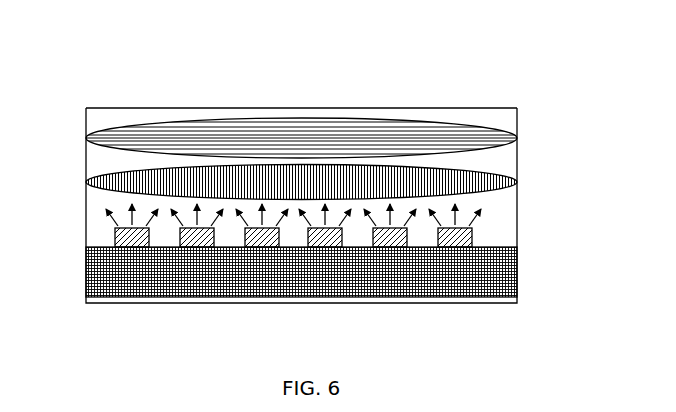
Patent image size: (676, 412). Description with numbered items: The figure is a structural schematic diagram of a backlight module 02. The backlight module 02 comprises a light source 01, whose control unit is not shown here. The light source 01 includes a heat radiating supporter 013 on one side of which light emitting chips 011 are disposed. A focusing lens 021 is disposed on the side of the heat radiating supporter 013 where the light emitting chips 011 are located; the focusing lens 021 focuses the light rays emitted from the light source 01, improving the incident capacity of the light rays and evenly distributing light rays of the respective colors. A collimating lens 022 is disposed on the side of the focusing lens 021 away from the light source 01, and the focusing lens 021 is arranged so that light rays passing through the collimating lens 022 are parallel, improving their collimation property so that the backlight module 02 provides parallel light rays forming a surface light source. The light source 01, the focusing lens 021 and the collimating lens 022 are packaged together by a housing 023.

The backlight module 02 is at (116, 49).
The housing 023 is at (467, 108).
The collimating lens 022 is at (517, 137).
The focusing lens 021 is at (517, 180).
The heat radiating supporter 013 is at (517, 270).
The light emitting chips 011 is at (142, 243).
The light source 01 is at (102, 233).